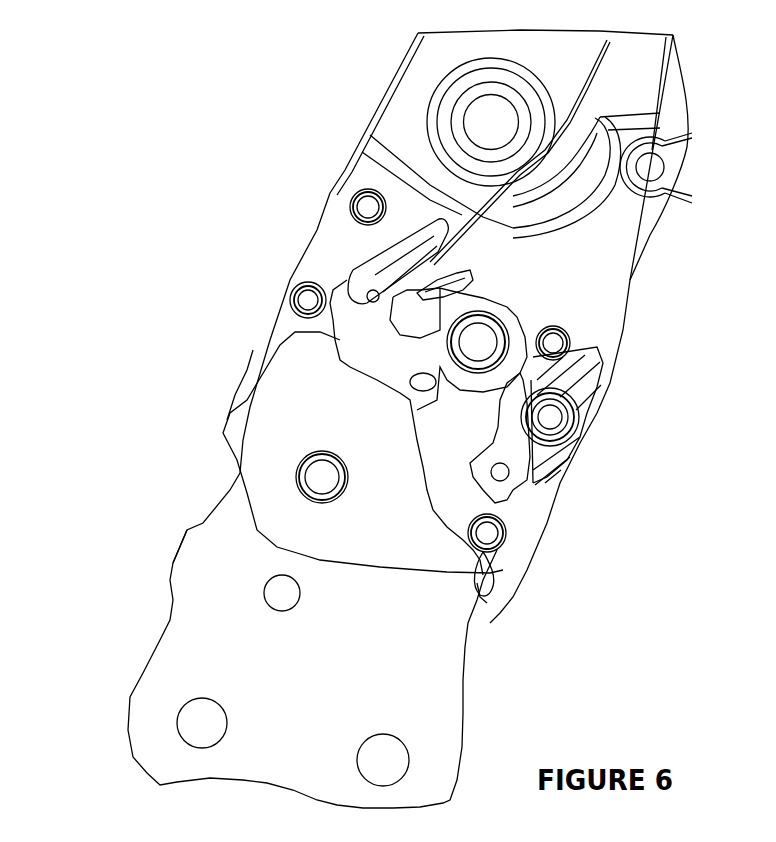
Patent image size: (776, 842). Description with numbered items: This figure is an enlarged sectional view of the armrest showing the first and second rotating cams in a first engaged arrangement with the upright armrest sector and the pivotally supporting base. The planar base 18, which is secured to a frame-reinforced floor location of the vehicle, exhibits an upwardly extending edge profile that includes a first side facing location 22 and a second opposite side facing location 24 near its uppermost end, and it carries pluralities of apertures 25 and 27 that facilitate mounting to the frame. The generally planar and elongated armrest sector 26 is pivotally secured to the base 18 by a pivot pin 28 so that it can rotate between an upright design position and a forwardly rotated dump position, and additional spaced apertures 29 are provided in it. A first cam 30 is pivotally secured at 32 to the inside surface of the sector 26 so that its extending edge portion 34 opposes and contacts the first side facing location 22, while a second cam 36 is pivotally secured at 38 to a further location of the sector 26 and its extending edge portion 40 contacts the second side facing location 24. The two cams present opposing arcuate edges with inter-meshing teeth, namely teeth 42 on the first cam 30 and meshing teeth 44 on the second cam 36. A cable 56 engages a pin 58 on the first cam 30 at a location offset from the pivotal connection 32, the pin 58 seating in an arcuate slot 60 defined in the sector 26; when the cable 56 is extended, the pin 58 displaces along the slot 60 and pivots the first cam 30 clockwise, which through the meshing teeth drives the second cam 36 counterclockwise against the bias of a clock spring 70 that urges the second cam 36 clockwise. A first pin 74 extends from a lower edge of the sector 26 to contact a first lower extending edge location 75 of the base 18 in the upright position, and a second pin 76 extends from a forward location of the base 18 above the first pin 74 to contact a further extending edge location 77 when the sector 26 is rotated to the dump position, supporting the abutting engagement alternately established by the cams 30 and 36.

The base 18 is at (187, 632).
The first side facing location 22 is at (345, 340).
The second opposite side facing location 24 is at (268, 353).
The apertures 25 is at (357, 762).
The armrest sector 26 is at (392, 125).
The apertures 27 is at (264, 595).
The pivot pin 28 is at (296, 477).
The spaced apertures 29 is at (518, 113).
The first cam 30 is at (515, 303).
The pivotal connection of first cam 32 is at (510, 322).
The extending edge portion 34 is at (345, 326).
The second cam 36 is at (565, 387).
The pivotal connection of second cam 38 is at (558, 422).
The extending edge portion 40 is at (506, 536).
The teeth 42 is at (570, 345).
The meshing teeth 44 is at (537, 467).
The cable 56 is at (513, 238).
The pin 58 is at (368, 292).
The arcuate slot 60 is at (397, 250).
The clock spring 70 is at (578, 415).
The first pin 74 is at (490, 551).
The first lower extending edge location 75 is at (480, 598).
The second pin 76 is at (295, 292).
The further extending edge location 77 is at (170, 567).